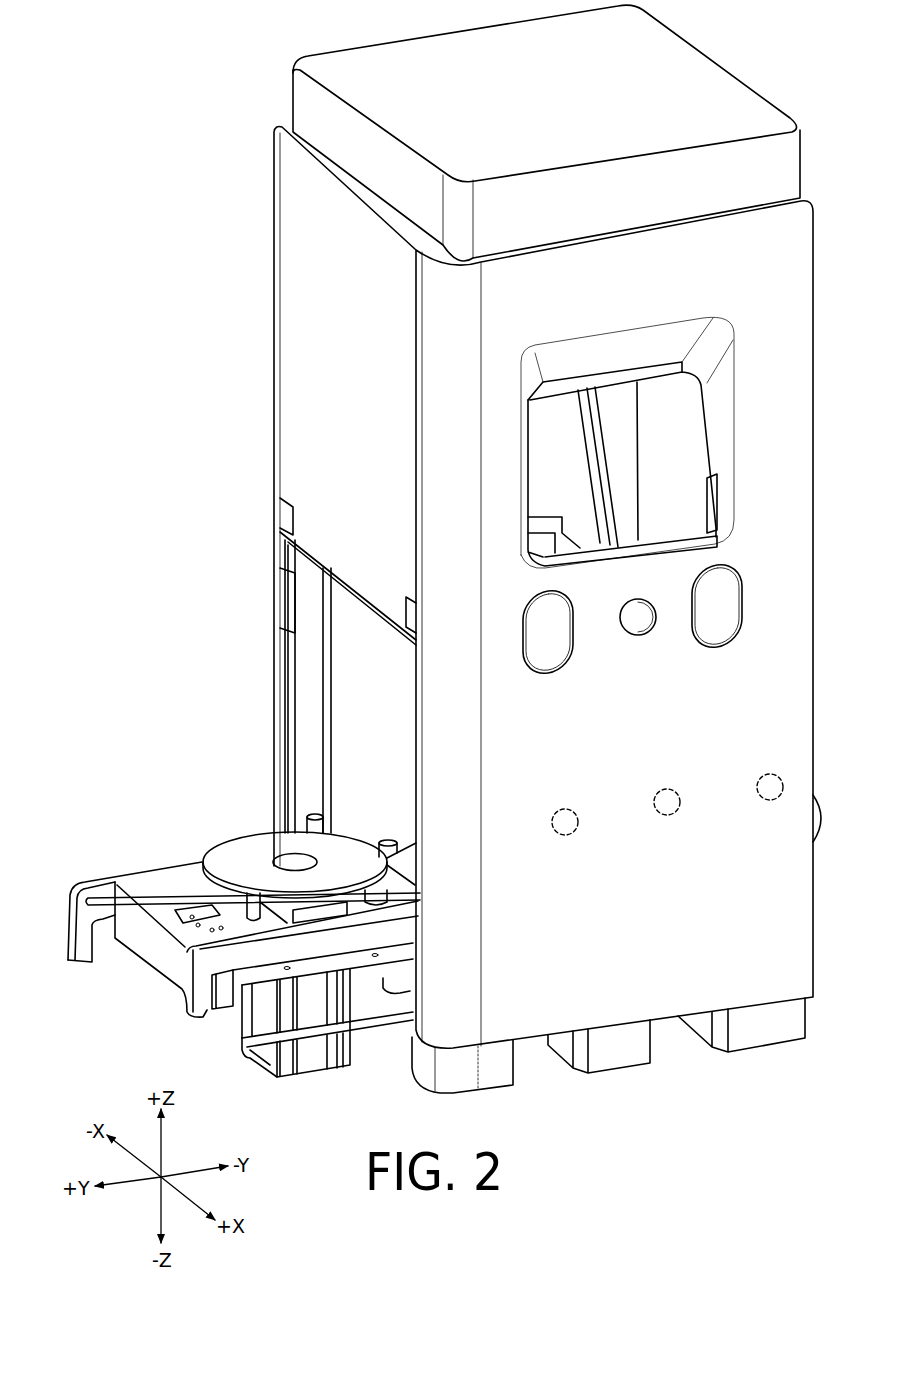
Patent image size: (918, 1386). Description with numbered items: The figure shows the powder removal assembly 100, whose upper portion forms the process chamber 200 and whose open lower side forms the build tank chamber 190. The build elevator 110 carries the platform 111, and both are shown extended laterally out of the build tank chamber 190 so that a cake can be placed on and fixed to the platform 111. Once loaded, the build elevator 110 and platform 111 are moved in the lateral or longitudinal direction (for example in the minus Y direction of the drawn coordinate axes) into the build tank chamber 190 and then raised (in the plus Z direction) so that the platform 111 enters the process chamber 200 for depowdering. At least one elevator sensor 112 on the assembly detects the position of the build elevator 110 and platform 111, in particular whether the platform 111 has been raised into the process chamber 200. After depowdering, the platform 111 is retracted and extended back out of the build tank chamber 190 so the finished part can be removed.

The powder removal assembly 100 is at (157, 88).
The process chamber 200 is at (244, 253).
The build tank chamber 190 is at (239, 731).
The build elevator 110 is at (216, 824).
The platform 111 is at (217, 860).
The elevator sensor 112 is at (568, 835).